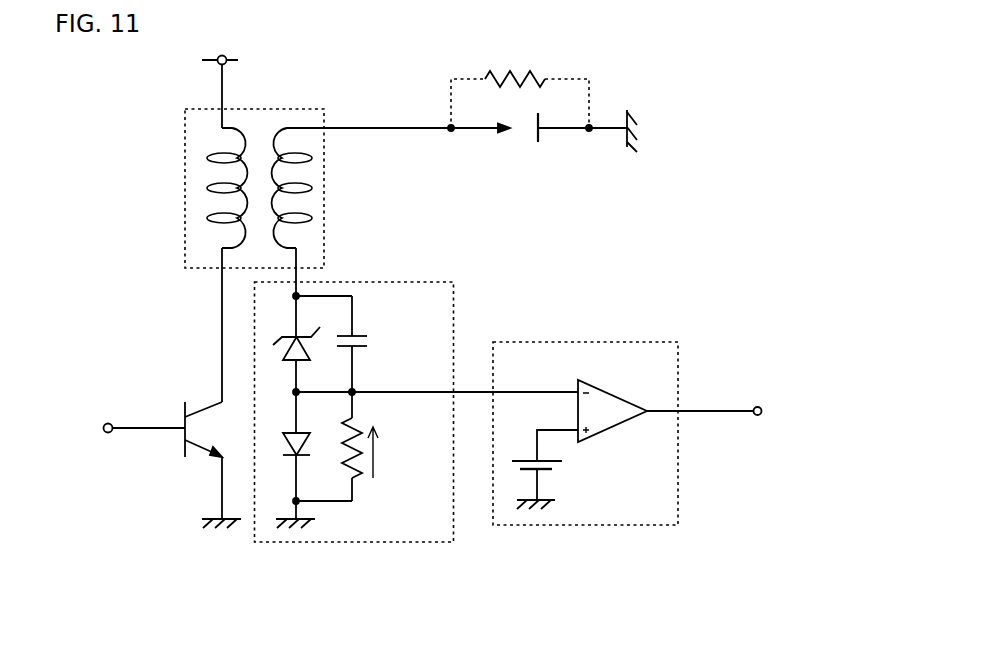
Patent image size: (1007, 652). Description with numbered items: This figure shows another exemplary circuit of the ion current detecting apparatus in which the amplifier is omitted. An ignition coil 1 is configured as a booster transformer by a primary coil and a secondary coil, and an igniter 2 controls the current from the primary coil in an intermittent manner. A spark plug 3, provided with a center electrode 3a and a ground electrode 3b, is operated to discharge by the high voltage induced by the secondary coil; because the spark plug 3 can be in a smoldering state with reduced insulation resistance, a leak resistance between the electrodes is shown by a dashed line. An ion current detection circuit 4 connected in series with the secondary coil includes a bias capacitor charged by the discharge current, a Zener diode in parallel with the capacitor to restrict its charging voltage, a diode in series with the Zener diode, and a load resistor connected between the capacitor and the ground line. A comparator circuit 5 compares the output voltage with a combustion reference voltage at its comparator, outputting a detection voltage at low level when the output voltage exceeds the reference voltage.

The ignition coil 1 is at (295, 108).
The igniter 2 is at (165, 487).
The spark plug 3 is at (531, 176).
The center electrode 3a is at (510, 125).
The ground electrode 3b is at (538, 120).
The ion current detection circuit 4 is at (392, 281).
The comparator circuit 5 is at (603, 341).